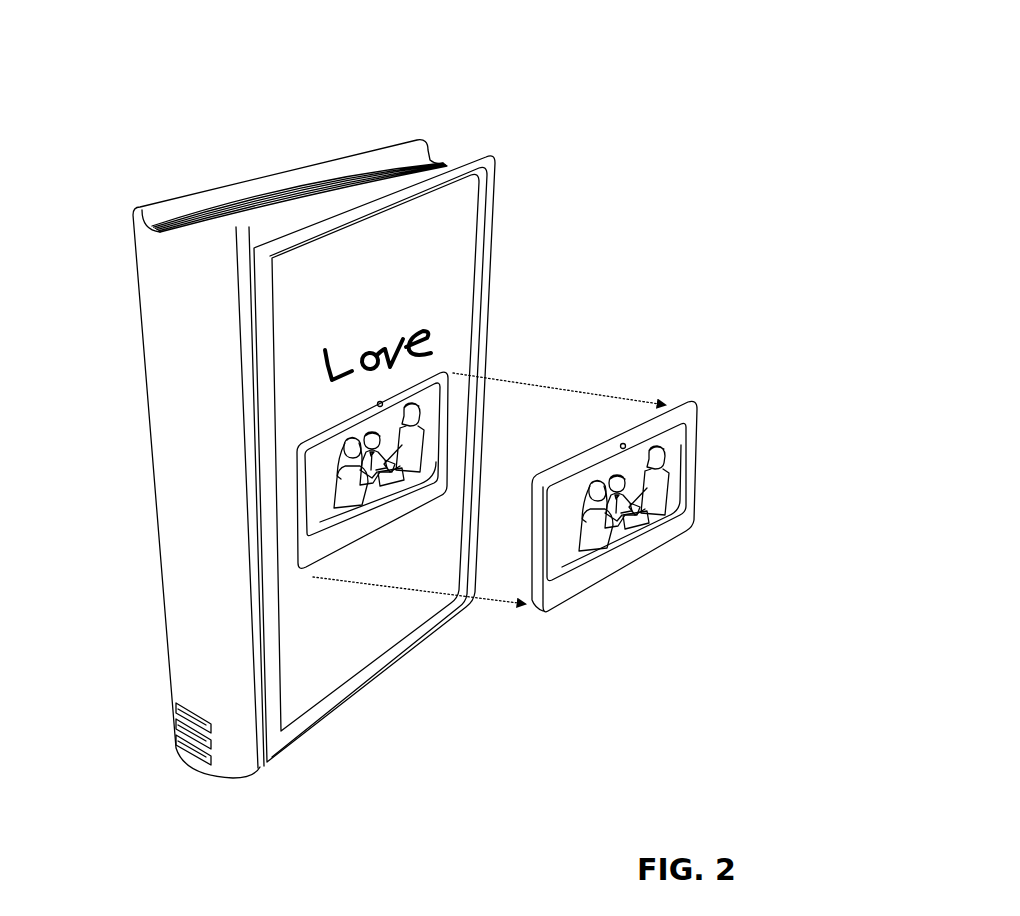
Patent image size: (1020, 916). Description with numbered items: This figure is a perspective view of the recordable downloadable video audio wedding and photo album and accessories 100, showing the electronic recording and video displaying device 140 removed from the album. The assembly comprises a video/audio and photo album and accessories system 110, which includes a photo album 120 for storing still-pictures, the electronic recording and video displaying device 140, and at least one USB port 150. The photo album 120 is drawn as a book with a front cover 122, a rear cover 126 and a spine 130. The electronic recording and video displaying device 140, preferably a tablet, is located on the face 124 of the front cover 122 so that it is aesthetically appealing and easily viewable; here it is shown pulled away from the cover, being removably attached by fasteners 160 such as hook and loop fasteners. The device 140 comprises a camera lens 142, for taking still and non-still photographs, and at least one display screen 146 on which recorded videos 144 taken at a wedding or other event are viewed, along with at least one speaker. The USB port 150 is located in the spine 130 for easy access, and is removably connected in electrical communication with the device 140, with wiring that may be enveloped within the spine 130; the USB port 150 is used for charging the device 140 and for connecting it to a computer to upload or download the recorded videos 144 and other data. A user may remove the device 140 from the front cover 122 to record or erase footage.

The recordable downloadable video audio wedding and photo album and accessories 100 is at (590, 83).
The video/audio and photo album and accessories system 110 is at (597, 135).
The photo album 120 is at (147, 188).
The front cover 122 is at (468, 186).
The face 124 is at (449, 371).
The rear cover 126 is at (399, 148).
The spine 130 is at (188, 433).
The electronic recording and video displaying device 140 is at (708, 462).
The camera lens 142 is at (375, 404).
The recorded videos 144 is at (566, 562).
The display screen 146 is at (684, 420).
The USB port 150 is at (183, 706).
The fasteners 160 is at (530, 527).